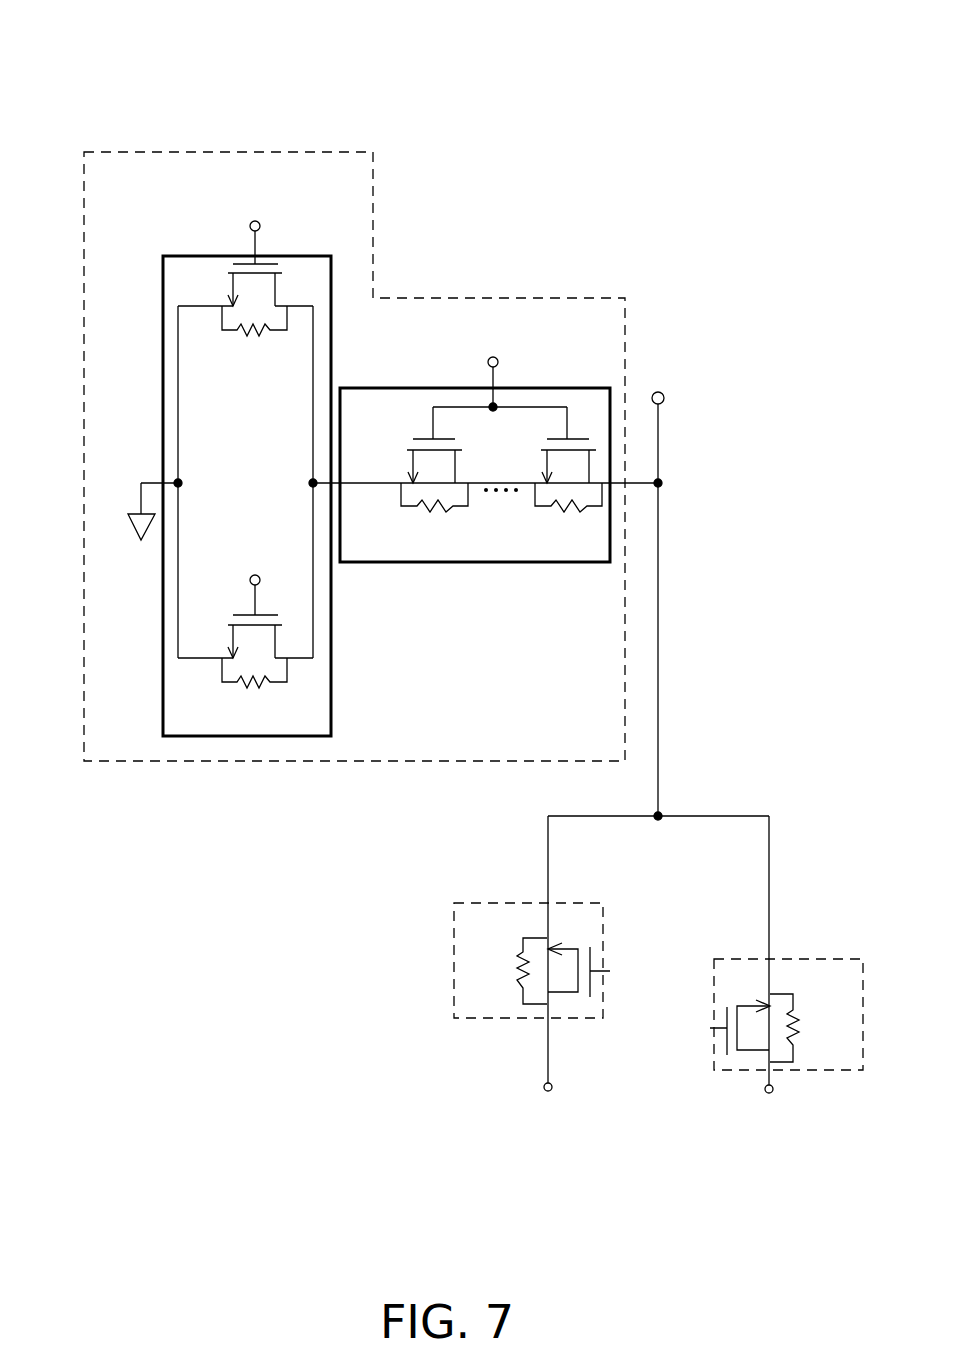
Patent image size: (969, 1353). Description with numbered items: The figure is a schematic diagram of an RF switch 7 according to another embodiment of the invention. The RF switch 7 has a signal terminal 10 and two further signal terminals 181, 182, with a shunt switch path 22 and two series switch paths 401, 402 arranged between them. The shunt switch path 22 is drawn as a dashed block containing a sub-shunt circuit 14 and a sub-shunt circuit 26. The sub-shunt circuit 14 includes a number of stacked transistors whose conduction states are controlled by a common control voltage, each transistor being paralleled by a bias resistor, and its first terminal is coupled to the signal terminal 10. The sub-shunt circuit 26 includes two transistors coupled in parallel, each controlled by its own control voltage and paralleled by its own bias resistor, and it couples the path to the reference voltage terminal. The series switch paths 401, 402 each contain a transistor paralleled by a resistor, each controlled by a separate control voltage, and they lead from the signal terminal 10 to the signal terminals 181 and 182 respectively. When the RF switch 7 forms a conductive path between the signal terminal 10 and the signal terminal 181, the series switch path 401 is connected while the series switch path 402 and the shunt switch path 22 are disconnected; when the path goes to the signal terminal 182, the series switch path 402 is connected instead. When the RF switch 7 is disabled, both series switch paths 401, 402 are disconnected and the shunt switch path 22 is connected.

The RF switch 7 is at (692, 112).
The shunt switch path 22 is at (230, 152).
The sub-shunt circuit 26 is at (247, 737).
The sub-shunt circuit 14 is at (476, 562).
The signal terminal 10 is at (658, 391).
The series switch path 401 is at (494, 903).
The series switch path 402 is at (828, 958).
The signal terminal 181 is at (548, 1093).
The signal terminal 182 is at (770, 1095).